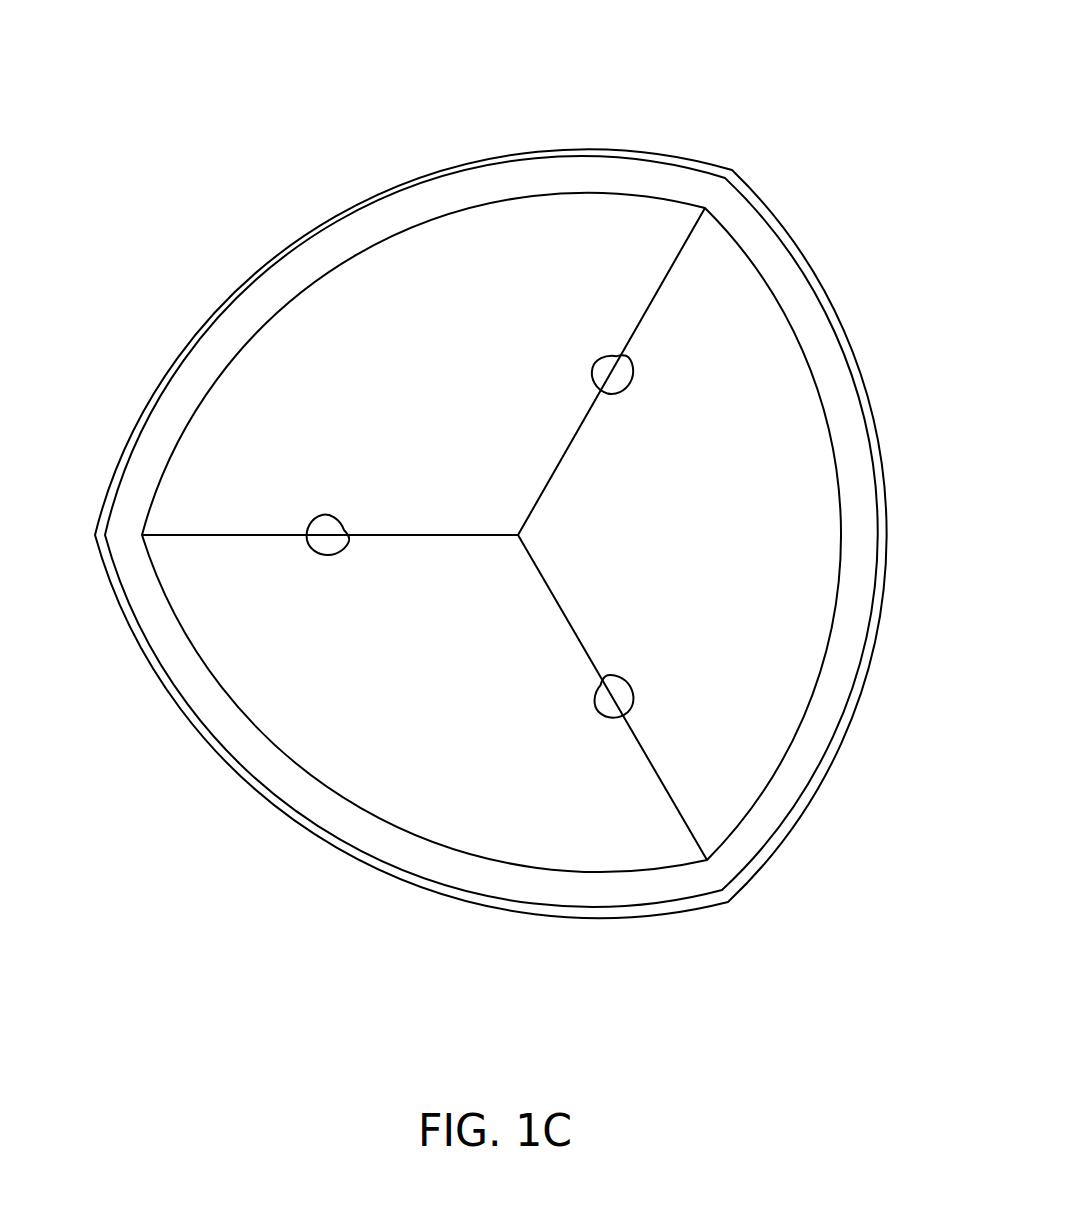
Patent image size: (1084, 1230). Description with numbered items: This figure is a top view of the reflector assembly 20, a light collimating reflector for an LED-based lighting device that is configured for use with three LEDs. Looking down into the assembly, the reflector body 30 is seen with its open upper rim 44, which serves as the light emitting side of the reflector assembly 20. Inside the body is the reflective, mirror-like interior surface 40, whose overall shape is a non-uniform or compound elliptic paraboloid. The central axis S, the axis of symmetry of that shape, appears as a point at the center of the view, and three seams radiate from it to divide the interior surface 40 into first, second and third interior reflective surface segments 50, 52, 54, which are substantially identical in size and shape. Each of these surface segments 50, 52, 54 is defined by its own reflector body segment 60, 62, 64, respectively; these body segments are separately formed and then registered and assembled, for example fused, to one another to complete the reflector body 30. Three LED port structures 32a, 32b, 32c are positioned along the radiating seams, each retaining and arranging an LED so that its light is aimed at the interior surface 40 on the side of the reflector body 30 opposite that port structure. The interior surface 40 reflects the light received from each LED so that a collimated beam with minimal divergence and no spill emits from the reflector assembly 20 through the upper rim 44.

The reflector assembly 20 is at (298, 103).
The reflector body 30 is at (518, 550).
The LED port structure 32a is at (308, 515).
The LED port structure 32b is at (641, 704).
The LED port structure 32c is at (637, 356).
The interior reflective surface 40 is at (344, 753).
The upper rim 44 is at (491, 486).
The first interior reflective surface segment 50 is at (749, 533).
The second interior reflective surface segment 52 is at (425, 352).
The third interior reflective surface segment 54 is at (457, 697).
The reflector body segment 60 is at (857, 442).
The reflector body segment 62 is at (290, 228).
The reflector body segment 64 is at (428, 882).
The central axis S is at (522, 534).